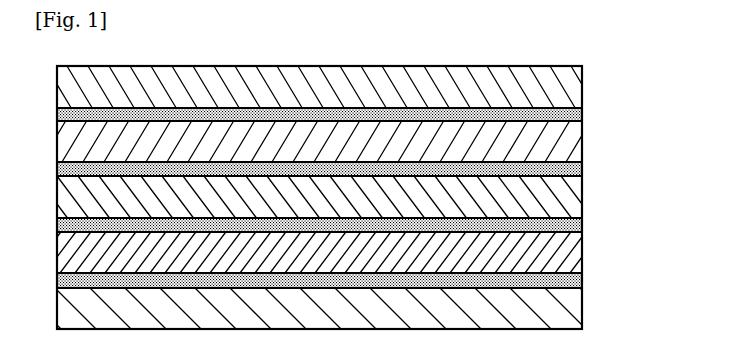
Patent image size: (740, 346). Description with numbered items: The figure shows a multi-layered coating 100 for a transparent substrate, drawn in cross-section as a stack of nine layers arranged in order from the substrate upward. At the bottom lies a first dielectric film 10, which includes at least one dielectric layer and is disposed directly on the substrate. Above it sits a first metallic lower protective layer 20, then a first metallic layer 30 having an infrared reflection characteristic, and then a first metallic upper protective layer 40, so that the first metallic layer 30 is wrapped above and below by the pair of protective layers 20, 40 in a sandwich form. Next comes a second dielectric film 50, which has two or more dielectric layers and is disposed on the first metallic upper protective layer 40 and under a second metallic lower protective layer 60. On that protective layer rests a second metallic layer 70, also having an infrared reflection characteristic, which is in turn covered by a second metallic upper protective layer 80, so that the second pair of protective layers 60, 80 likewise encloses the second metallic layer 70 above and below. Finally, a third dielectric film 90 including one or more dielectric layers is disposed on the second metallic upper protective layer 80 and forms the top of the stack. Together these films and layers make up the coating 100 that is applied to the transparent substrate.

The first dielectric film 10 is at (563, 307).
The first metallic lower protective layer 20 is at (570, 281).
The first metallic layer 30 is at (563, 252).
The first metallic upper protective layer 40 is at (570, 225).
The second dielectric film 50 is at (563, 196).
The second metallic lower protective layer 60 is at (570, 169).
The second metallic layer 70 is at (563, 141).
The second metallic upper protective layer 80 is at (570, 114).
The third dielectric film 90 is at (563, 86).
The coating 100 is at (647, 319).